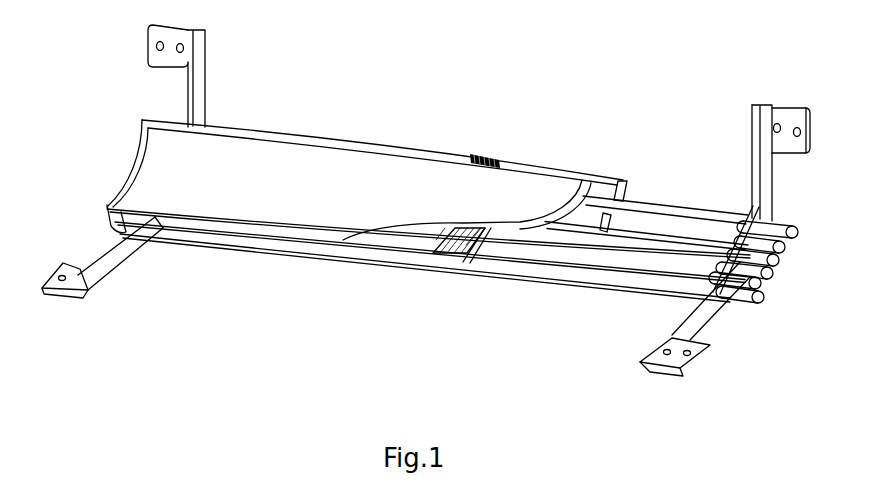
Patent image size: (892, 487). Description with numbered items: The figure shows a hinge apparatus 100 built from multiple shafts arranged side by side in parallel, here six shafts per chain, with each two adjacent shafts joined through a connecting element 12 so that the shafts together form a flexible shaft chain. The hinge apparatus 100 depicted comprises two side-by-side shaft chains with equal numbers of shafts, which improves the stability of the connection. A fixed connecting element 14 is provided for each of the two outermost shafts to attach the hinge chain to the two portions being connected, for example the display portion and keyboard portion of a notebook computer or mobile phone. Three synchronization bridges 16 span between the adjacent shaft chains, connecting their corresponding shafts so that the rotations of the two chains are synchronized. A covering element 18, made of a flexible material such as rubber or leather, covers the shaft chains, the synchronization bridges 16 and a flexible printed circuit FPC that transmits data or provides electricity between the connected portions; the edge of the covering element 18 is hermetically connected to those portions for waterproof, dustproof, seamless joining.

The hinge apparatus 100 is at (424, 56).
The connecting element 12 is at (750, 233).
The fixed connecting element 14 is at (789, 120).
The synchronization bridge 16 is at (613, 287).
The covering element 18 is at (197, 180).
The flexible printed circuit FPC is at (455, 268).